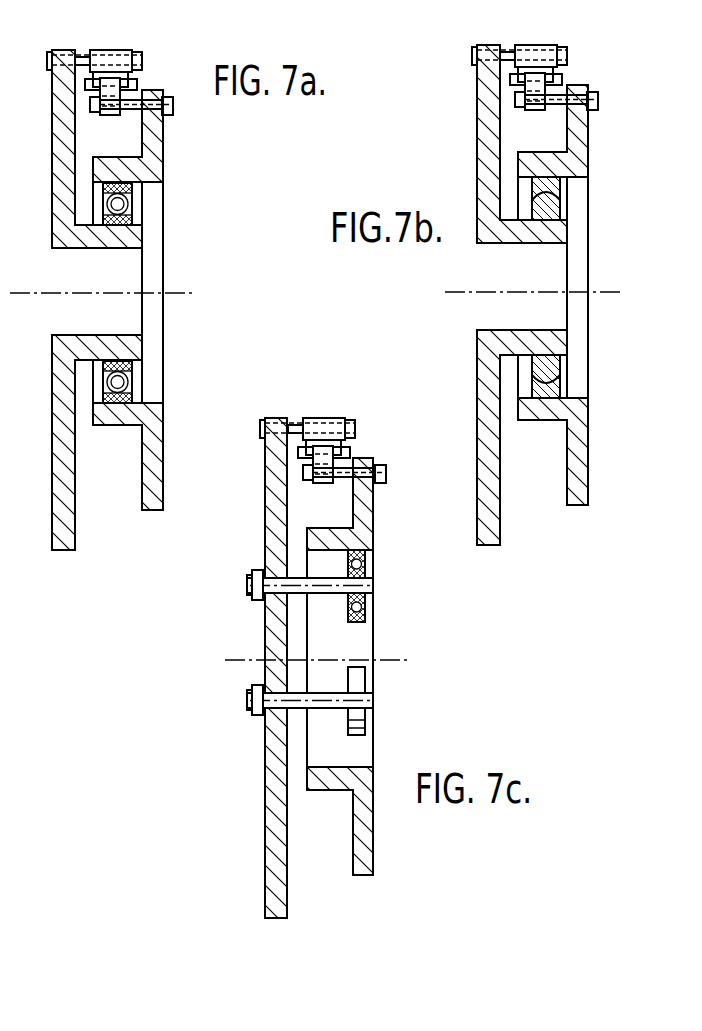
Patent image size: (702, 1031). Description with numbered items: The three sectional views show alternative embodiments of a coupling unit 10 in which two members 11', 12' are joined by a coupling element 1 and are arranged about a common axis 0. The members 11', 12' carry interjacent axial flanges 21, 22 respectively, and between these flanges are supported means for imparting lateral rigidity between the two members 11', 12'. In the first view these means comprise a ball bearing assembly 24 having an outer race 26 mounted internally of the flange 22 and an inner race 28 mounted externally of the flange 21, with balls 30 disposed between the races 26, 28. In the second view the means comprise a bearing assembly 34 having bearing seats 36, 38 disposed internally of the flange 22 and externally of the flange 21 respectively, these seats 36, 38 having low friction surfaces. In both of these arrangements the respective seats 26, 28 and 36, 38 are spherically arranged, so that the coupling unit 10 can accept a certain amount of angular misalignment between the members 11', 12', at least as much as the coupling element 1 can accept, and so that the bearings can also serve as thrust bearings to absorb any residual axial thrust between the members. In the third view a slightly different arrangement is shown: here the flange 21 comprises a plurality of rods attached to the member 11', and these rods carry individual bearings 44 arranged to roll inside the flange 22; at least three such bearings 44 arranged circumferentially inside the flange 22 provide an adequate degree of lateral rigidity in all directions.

In FIG. 7A, the axis of rotation 0 is at (107, 294).
In FIG. 7B, the axis of rotation 0 is at (541, 294).
In FIG. 7A, the coupling element 1 is at (107, 44).
In FIG. 7B, the coupling element 1 is at (535, 42).
In FIG. 7C, the coupling element 1 is at (335, 409).
In FIG. 7A, the coupling unit 10 is at (168, 45).
In FIG. 7B, the coupling unit 10 is at (500, 40).
In FIG. 7C, the coupling unit 10 is at (303, 410).
In FIG. 7A, the member 11' is at (94, 301).
In FIG. 7B, the member 11' is at (519, 298).
In FIG. 7C, the member 11' is at (295, 668).
In FIG. 7A, the member 12' is at (146, 311).
In FIG. 7B, the member 12' is at (574, 306).
In FIG. 7C, the member 12' is at (358, 685).
In FIG. 7A, the axial flange 21 is at (142, 352).
In FIG. 7B, the axial flange 21 is at (567, 355).
In FIG. 7C, the axial flange 21 is at (373, 587).
In FIG. 7A, the axial flange 22 is at (93, 427).
In FIG. 7B, the axial flange 22 is at (520, 422).
In FIG. 7C, the axial flange 22 is at (310, 790).
In FIG. 7A, the ball bearing assembly 24 is at (147, 222).
In FIG. 7A, the outer race 26 is at (130, 192).
In FIG. 7A, the inner race 28 is at (133, 218).
In FIG. 7A, the balls 30 is at (130, 387).
In FIG. 7B, the bearing assembly 34 is at (570, 287).
In FIG. 7B, the bearing seat 36 is at (562, 188).
In FIG. 7B, the bearing seat 38 is at (563, 213).
In FIG. 7C, the bearings 44 is at (365, 622).